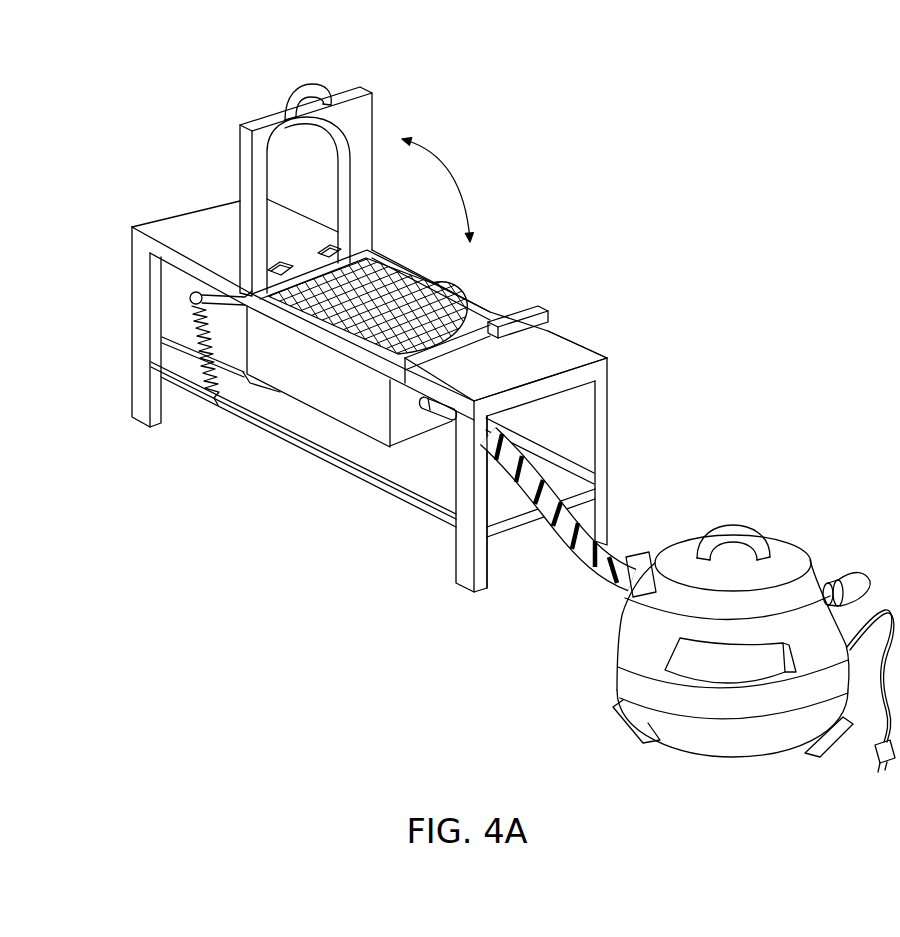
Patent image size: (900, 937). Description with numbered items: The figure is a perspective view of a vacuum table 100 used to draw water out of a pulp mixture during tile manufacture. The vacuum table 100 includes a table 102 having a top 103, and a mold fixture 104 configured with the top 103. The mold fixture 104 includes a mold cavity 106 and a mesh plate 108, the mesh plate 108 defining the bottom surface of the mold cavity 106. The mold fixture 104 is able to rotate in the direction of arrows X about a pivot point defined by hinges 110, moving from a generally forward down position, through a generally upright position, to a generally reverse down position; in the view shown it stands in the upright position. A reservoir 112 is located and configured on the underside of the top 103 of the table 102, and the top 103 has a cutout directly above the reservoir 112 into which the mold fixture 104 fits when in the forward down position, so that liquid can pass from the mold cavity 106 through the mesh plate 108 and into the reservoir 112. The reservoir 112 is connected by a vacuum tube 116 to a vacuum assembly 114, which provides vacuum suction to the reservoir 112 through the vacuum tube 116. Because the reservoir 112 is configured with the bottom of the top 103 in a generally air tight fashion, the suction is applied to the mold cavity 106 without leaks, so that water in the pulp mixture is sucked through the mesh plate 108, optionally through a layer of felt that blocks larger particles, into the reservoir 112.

The vacuum table 100 is at (733, 184).
The table 102 is at (150, 222).
The top 103 is at (550, 350).
The mold fixture 104 is at (246, 125).
The mold cavity 106 is at (432, 296).
The mesh plate 108 is at (430, 268).
The hinges 110 is at (352, 243).
The reservoir 112 is at (342, 395).
The vacuum assembly 114 is at (783, 548).
The vacuum tube 116 is at (605, 584).